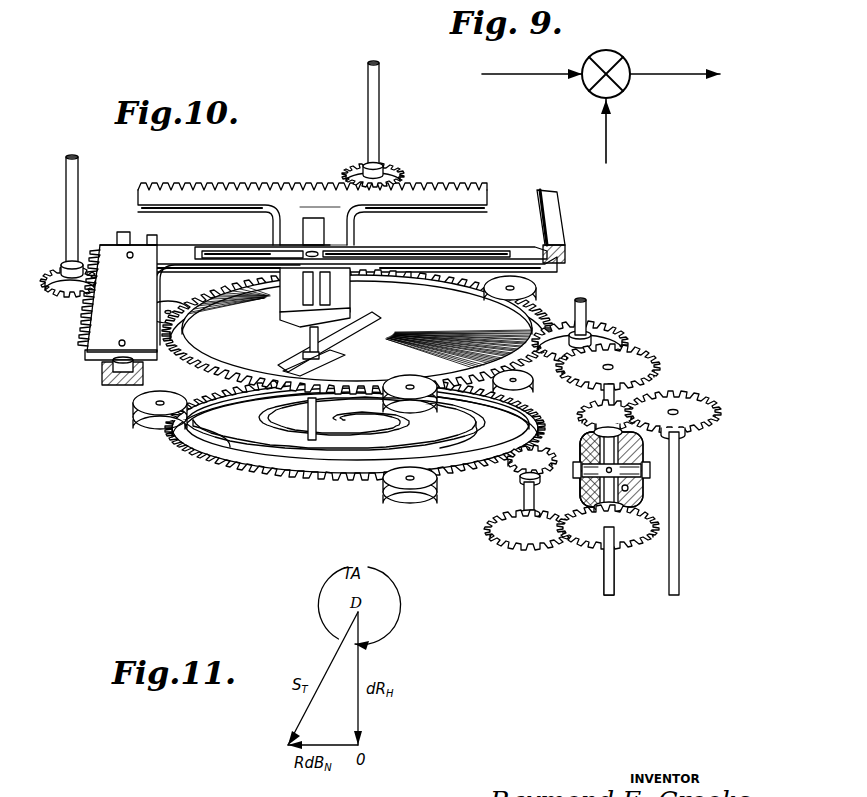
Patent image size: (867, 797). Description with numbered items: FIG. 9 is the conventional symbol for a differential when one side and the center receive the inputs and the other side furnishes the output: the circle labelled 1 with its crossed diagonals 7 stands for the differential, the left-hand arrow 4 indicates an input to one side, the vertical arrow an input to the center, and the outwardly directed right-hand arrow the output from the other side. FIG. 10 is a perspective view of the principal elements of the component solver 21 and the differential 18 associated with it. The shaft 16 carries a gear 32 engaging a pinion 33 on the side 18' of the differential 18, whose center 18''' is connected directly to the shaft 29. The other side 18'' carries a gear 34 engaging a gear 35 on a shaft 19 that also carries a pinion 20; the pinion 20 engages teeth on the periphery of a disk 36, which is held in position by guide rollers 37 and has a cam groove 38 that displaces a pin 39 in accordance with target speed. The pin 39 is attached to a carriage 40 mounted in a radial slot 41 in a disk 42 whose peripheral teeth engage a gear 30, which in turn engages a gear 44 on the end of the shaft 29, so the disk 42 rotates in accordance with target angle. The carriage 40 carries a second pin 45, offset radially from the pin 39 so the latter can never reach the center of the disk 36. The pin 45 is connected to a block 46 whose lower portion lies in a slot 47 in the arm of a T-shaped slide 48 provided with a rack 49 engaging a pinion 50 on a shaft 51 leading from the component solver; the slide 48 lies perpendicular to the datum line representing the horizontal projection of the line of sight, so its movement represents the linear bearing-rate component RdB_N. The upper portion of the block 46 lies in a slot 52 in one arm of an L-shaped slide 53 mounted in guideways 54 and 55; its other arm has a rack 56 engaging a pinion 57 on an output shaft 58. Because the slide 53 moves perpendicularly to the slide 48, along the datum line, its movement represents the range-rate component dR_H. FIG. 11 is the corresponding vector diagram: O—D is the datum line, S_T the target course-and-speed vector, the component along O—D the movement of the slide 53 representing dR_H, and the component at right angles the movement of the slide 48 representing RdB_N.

In FIG. 9, the mixer / summing element 1 is at (628, 70).
In FIG. 9, the input signal line 4 is at (585, 67).
In FIG. 9, the input and output signal arrows 7 is at (612, 58).
In FIG. 10, the shaft 16 is at (680, 578).
In FIG. 10, the differential 18 is at (597, 472).
In FIG. 10, the side of the differential 18' is at (587, 431).
In FIG. 10, the side of the differential 18'' is at (659, 513).
In FIG. 10, the center of the differential 18''' is at (584, 495).
In FIG. 10, the shaft 19 is at (524, 500).
In FIG. 10, the pinion 20 is at (516, 472).
In FIG. 10, the component solver 21 is at (503, 185).
In FIG. 10, the shaft 29 is at (604, 580).
In FIG. 10, the gear 30 is at (605, 336).
In FIG. 10, the gear 32 is at (692, 402).
In FIG. 10, the pinion 33 is at (625, 405).
In FIG. 10, the gear 34 is at (590, 544).
In FIG. 10, the gear 35 is at (524, 546).
In FIG. 10, the disk 36 is at (348, 485).
In FIG. 10, the guide rollers 37 is at (152, 422).
In FIG. 10, the cam groove 38 is at (208, 432).
In FIG. 10, the pin 39 is at (310, 435).
In FIG. 10, the carriage 40 is at (300, 352).
In FIG. 10, the radial slot 41 is at (378, 330).
In FIG. 10, the disk 42 is at (215, 333).
In FIG. 10, the gear 44 is at (636, 360).
In FIG. 10, the pin 45 is at (310, 338).
In FIG. 10, the block 46 is at (318, 252).
In FIG. 10, the slot 47 is at (303, 232).
In FIG. 10, the T-shaped slide 48 is at (282, 190).
In FIG. 10, the rack 49 is at (320, 188).
In FIG. 10, the pinion 50 is at (386, 170).
In FIG. 10, the shaft 51 is at (380, 130).
In FIG. 10, the slot 52 is at (430, 258).
In FIG. 10, the L-shaped slide 53 is at (165, 256).
In FIG. 10, the guideway 54 is at (560, 228).
In FIG. 10, the guideway 55 is at (108, 386).
In FIG. 10, the rack 56 is at (88, 334).
In FIG. 10, the pinion 57 is at (50, 290).
In FIG. 10, the output shaft 58 is at (66, 213).